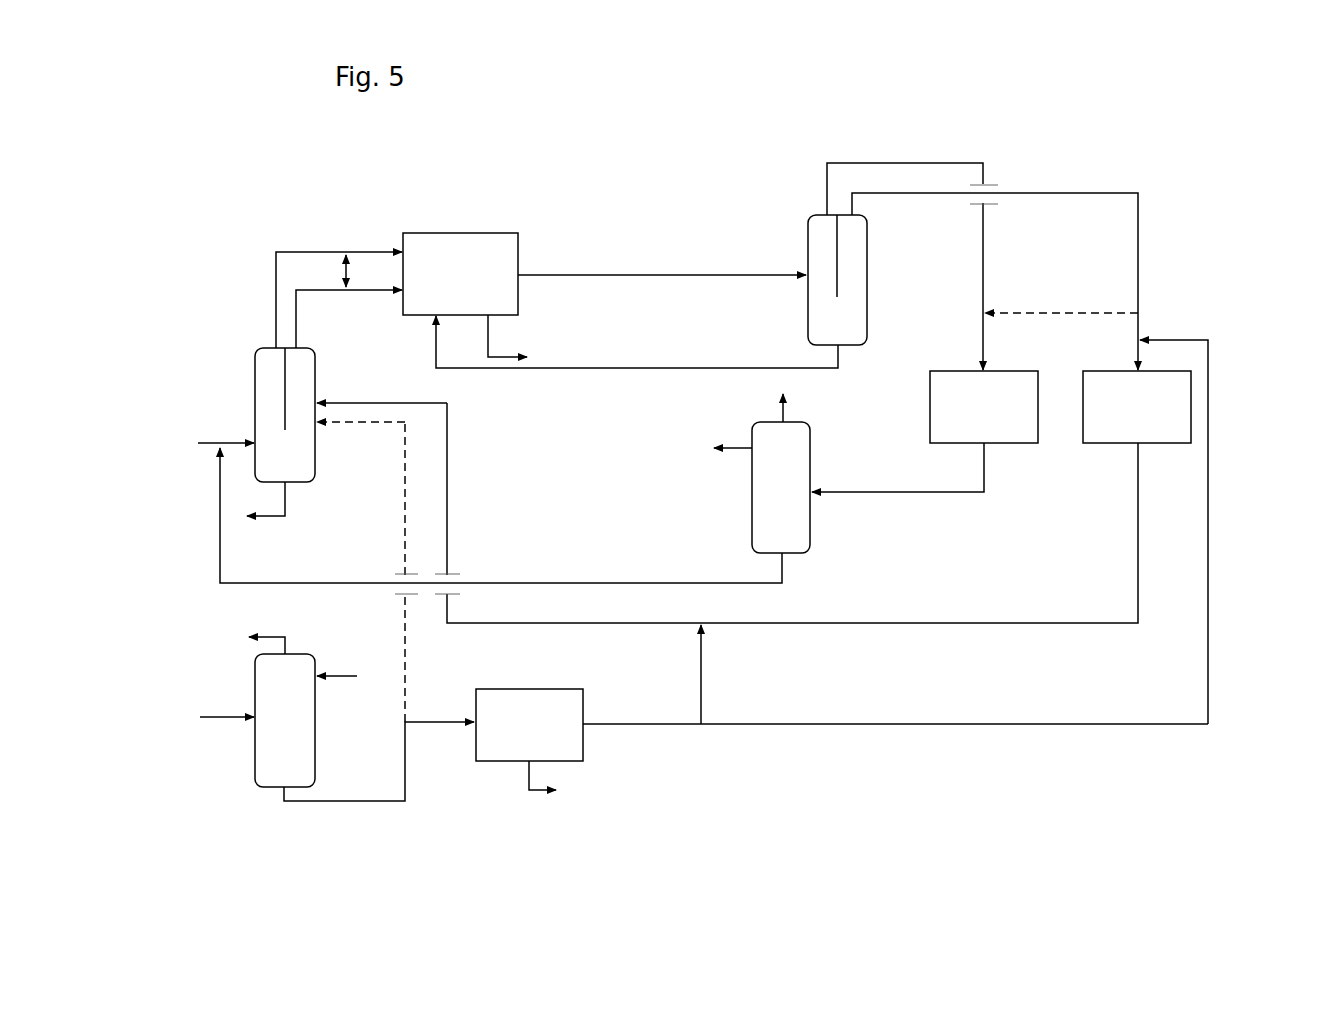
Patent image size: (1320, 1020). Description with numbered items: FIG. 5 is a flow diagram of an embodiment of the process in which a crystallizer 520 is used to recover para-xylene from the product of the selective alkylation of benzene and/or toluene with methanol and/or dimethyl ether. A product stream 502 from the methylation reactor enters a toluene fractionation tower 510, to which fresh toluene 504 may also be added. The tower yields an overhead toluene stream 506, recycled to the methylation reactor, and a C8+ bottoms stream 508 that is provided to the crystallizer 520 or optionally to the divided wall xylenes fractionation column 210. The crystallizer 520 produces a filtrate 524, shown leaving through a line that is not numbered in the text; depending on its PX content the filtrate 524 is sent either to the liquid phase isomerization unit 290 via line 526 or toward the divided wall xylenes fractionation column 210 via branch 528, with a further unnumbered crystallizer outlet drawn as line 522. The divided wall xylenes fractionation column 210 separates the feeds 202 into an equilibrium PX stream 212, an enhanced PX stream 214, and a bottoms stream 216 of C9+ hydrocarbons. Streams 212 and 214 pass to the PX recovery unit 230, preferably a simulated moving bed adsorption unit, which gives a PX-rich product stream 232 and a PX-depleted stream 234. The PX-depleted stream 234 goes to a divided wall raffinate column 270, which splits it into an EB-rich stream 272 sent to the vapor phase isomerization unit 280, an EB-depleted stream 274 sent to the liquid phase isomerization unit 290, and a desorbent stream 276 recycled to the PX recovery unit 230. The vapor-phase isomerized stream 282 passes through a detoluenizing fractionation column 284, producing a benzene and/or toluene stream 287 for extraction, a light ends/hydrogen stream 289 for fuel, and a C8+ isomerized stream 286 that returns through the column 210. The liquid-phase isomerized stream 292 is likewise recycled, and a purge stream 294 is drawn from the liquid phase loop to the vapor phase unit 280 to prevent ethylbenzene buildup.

The feed 202 is at (226, 432).
The divided wall xylenes fractionation column 210 is at (274, 461).
The equilibrium PX stream 212 is at (339, 291).
The enhanced PX stream 214 is at (349, 319).
The bottoms stream 216 is at (269, 508).
The PX recovery unit 230 is at (449, 279).
The PX-rich product stream 232 is at (507, 336).
The PX-depleted stream 234 is at (662, 265).
The divided wall raffinate column 270 is at (826, 325).
The EB-rich stream 272 is at (912, 256).
The EB-depleted stream 274 is at (995, 281).
The desorbent stream 276 is at (652, 343).
The isomerization unit 280 is at (973, 413).
The vapor-phase isomerized stream 282 is at (913, 467).
The detoluenizing fractionation column 284 is at (770, 499).
The C8+ isomerized stream 286 is at (518, 515).
The benzene and/or toluene stream 287 is at (731, 437).
The light ends/hydrogen stream 289 is at (800, 408).
The isomerization unit 290 is at (1126, 413).
The liquid-phase isomerized stream 292 is at (741, 513).
The purge stream 294 is at (1061, 323).
The product stream 502 is at (227, 704).
The fresh toluene 504 is at (337, 686).
The overhead toluene stream 506 is at (282, 641).
The C8+ bottoms stream 508 is at (379, 611).
The toluene fractionation tower 510 is at (274, 734).
The crystallizer 520 is at (519, 732).
The purge stream 522 is at (557, 779).
The filtrate 524 is at (895, 713).
The recycle stream 526 is at (1190, 532).
The branch stream 528 is at (718, 674).